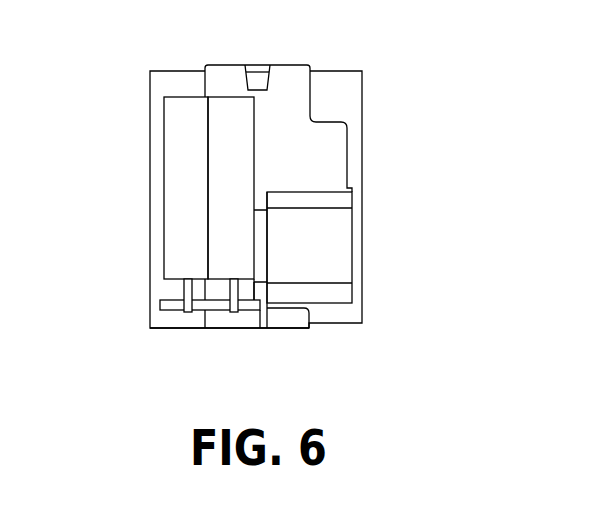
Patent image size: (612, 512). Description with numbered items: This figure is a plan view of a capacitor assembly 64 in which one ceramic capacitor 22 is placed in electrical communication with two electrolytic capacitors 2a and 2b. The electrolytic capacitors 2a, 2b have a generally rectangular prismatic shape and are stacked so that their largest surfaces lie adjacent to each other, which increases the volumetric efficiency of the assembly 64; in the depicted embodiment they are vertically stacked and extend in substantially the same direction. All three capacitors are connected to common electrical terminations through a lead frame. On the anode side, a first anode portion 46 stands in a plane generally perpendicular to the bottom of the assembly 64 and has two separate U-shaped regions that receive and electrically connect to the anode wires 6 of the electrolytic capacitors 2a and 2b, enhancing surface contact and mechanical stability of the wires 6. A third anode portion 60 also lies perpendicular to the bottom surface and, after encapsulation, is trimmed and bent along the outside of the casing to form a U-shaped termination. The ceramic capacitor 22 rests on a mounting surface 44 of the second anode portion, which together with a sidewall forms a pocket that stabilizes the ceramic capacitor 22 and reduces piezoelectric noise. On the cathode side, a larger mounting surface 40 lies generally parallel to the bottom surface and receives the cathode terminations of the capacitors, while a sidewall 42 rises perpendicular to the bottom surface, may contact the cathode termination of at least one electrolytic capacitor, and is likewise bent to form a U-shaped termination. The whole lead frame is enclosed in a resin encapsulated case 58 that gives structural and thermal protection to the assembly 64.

The sidewall 42 is at (227, 75).
The capacitor assembly 64 is at (392, 95).
The mounting surface 40 is at (292, 158).
The electrolytic capacitor 2a is at (196, 190).
The electrolytic capacitor 2b is at (239, 190).
The ceramic capacitor 22 is at (319, 251).
The encapsulated case 58 is at (358, 255).
The first anode portion 46 is at (165, 305).
The anode wires 6 is at (232, 313).
The third anode portion 60 is at (238, 328).
The mounting surface 44 is at (252, 288).